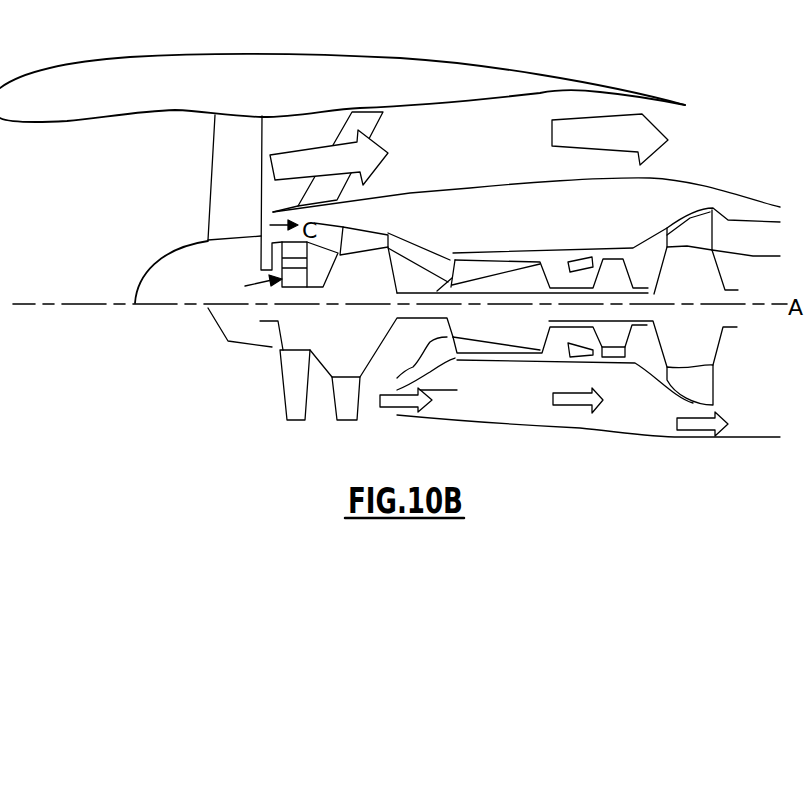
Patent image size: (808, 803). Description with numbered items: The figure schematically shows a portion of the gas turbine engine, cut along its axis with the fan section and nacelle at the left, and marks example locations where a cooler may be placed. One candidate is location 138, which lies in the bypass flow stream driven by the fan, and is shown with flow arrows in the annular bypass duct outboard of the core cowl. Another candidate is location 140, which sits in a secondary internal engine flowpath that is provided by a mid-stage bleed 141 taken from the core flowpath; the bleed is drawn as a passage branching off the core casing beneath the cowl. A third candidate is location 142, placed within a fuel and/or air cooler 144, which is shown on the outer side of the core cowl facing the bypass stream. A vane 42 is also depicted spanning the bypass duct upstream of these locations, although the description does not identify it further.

The fan exit guide vane 42 is at (332, 187).
The cooler location in the bypass flow stream 138 is at (455, 149).
The cooler location in the secondary internal engine flowpath 140 is at (440, 304).
The mid-stage bleed 141 is at (455, 285).
The cooler location in the fuel and/or air cooler 142 is at (552, 218).
The fuel and/or air cooler 144 is at (683, 180).